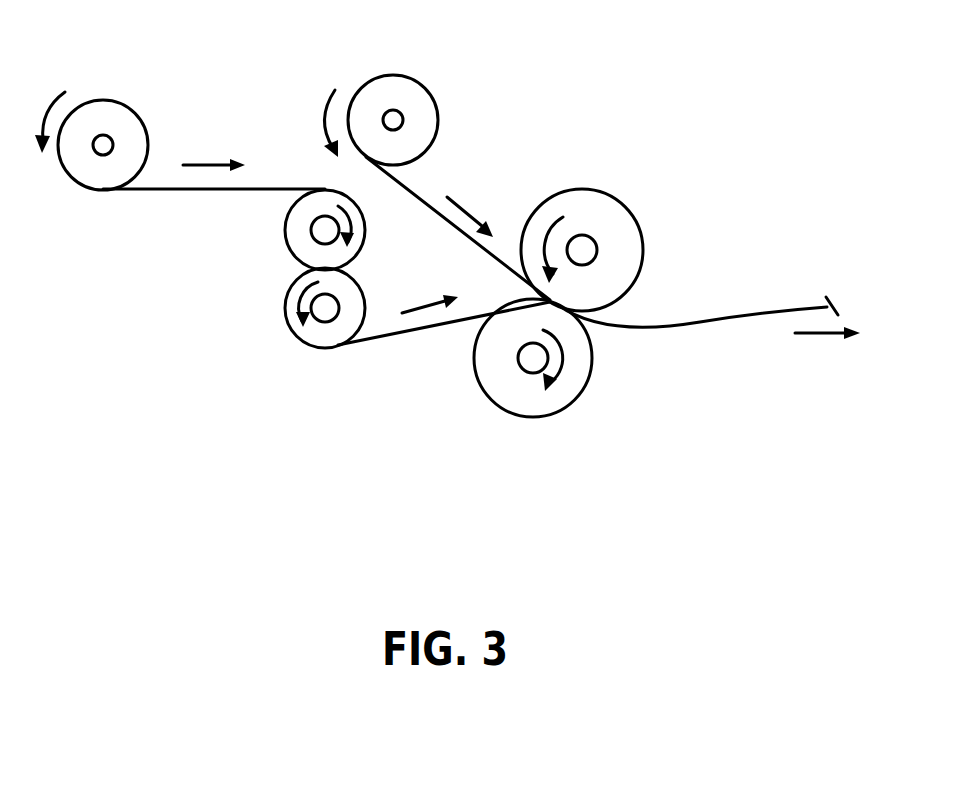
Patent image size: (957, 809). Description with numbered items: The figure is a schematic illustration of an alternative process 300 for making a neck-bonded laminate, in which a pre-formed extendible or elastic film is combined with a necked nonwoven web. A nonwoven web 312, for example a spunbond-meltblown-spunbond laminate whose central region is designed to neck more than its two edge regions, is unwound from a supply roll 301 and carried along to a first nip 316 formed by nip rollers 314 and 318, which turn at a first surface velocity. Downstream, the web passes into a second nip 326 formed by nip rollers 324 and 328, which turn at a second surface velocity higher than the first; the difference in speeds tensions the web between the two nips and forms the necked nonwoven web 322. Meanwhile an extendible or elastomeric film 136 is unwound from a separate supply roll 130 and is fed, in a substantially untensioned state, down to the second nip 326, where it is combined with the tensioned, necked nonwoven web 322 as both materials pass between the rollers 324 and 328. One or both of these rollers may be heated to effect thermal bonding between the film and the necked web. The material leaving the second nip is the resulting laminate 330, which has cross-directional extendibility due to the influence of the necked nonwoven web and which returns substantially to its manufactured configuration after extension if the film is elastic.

The process 300 is at (567, 85).
The supply roll 301 is at (113, 108).
The nonwoven web 312 is at (177, 190).
The nip roller 314 is at (297, 227).
The first nip 316 is at (285, 270).
The nip roller 318 is at (308, 335).
The necked nonwoven web 322 is at (380, 340).
The supply roll 130 is at (403, 87).
The extendible or elastomeric film 136 is at (420, 193).
The second nip 326 is at (503, 287).
The nip roller 324 is at (623, 227).
The nip roller 328 is at (503, 408).
The laminate 330 is at (780, 307).